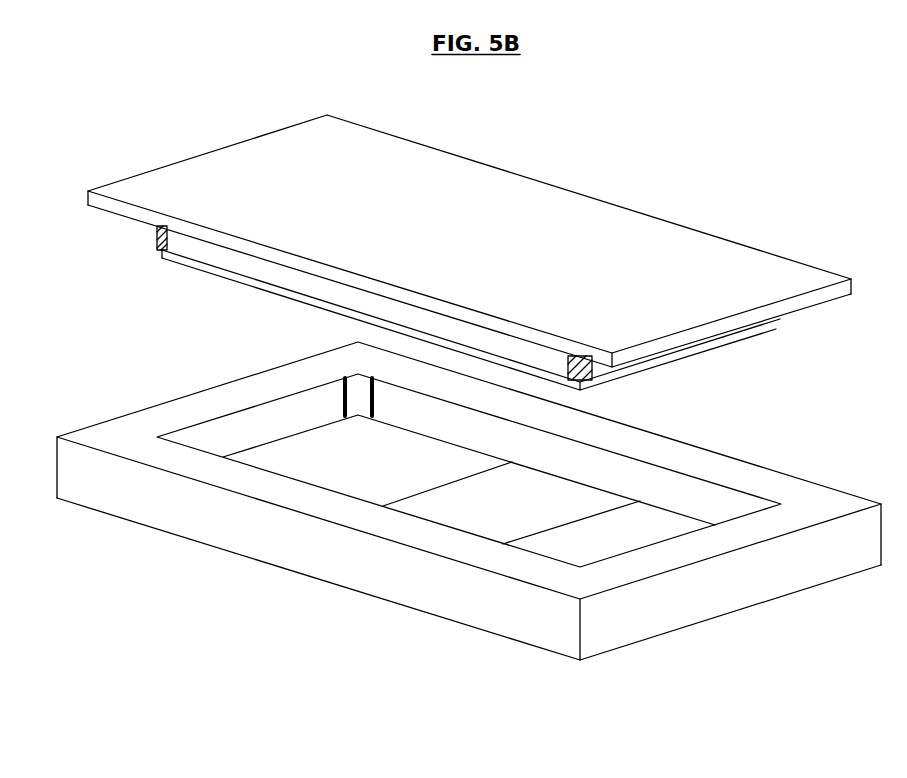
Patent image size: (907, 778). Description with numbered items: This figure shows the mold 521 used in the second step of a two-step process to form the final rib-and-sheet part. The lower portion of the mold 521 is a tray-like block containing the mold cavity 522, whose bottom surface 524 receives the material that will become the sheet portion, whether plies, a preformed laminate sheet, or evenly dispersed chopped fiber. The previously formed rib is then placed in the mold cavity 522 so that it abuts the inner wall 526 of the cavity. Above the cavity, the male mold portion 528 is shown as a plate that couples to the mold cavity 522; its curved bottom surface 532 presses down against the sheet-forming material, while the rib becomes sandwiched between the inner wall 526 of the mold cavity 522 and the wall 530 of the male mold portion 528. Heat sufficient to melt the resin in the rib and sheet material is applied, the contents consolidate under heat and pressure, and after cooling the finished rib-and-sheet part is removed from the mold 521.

The mold 521 is at (697, 166).
The mold cavity 522 is at (377, 573).
The bottom surface 524 is at (317, 452).
The inner wall 526 is at (550, 460).
The male mold portion 528 is at (164, 164).
The wall 530 is at (181, 240).
The curved bottom surface 532 is at (229, 272).